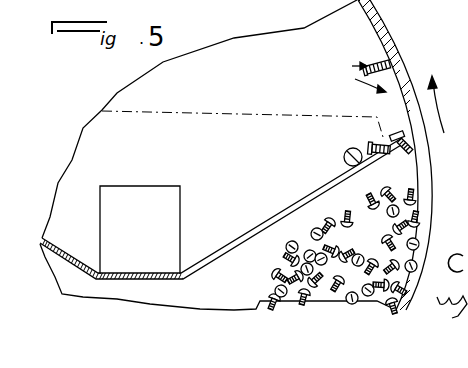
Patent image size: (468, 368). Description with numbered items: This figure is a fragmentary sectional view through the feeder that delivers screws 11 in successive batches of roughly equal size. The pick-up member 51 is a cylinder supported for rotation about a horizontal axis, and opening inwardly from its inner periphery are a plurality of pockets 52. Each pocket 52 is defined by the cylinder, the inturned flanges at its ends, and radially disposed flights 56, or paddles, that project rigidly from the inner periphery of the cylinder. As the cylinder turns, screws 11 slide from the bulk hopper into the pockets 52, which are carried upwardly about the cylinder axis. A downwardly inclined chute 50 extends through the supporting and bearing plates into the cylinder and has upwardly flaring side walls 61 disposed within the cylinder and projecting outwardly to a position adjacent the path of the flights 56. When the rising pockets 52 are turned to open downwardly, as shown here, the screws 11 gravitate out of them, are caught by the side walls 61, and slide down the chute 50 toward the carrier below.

The chute 50 is at (157, 196).
The pick-up member 51 is at (385, 27).
The pockets 52 is at (358, 77).
The flights 56 is at (375, 63).
The side walls 61 is at (47, 239).
The screws 11 is at (364, 147).